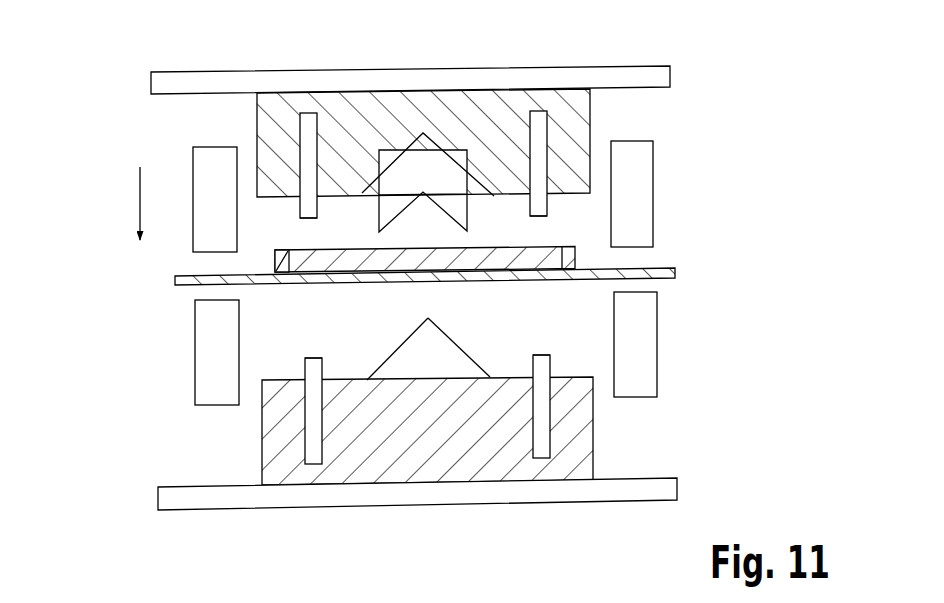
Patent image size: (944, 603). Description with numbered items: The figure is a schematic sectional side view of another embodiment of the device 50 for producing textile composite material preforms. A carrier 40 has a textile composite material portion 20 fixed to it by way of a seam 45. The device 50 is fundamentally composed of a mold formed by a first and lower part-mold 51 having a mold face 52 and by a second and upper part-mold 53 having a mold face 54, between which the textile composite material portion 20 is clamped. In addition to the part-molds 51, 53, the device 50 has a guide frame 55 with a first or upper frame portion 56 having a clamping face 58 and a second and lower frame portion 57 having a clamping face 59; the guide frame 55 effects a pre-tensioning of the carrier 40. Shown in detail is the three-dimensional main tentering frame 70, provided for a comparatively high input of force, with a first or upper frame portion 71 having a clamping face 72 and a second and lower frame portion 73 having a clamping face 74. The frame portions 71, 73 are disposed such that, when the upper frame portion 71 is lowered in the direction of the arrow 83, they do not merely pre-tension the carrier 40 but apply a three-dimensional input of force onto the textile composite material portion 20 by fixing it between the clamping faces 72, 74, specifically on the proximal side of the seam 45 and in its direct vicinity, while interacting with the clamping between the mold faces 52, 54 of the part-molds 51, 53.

The device 50 is at (132, 50).
The textile composite material portion 20 is at (266, 256).
The seam 45 is at (286, 252).
The first or upper frame portion 71 is at (312, 127).
The clamping face 72 is at (312, 219).
The mold face 54 is at (417, 195).
The second and upper part-mold 53 is at (493, 209).
The main tentering frame 70 is at (557, 133).
The guide frame 55 is at (682, 255).
The first or upper frame portion 56 is at (632, 175).
The clamping face 58 is at (625, 258).
The clamping face 59 is at (615, 290).
The second and lower frame portion 57 is at (640, 383).
The clamping face 74 is at (317, 355).
The second and lower frame portion 73 is at (313, 452).
The mold face 52 is at (392, 336).
The first and lower part-mold 51 is at (460, 334).
The arrow 83 is at (138, 195).
The carrier 40 is at (168, 282).